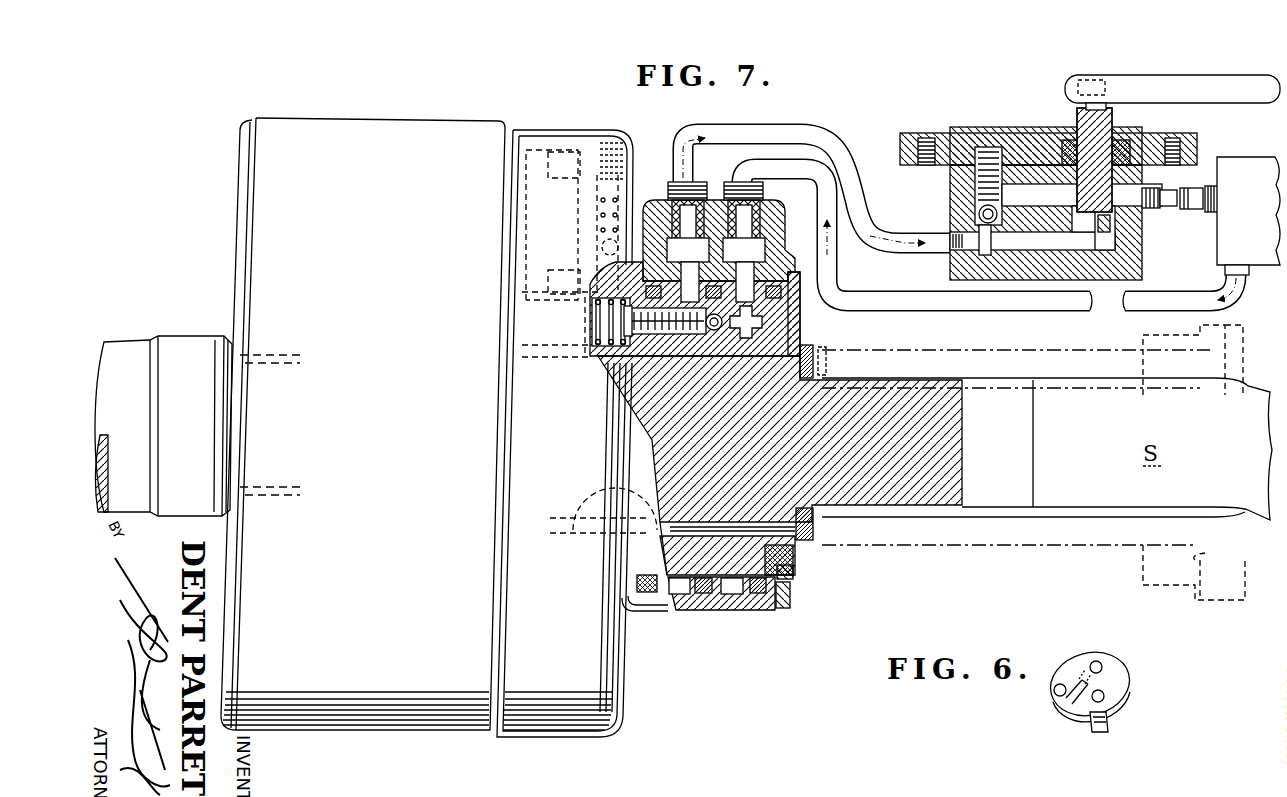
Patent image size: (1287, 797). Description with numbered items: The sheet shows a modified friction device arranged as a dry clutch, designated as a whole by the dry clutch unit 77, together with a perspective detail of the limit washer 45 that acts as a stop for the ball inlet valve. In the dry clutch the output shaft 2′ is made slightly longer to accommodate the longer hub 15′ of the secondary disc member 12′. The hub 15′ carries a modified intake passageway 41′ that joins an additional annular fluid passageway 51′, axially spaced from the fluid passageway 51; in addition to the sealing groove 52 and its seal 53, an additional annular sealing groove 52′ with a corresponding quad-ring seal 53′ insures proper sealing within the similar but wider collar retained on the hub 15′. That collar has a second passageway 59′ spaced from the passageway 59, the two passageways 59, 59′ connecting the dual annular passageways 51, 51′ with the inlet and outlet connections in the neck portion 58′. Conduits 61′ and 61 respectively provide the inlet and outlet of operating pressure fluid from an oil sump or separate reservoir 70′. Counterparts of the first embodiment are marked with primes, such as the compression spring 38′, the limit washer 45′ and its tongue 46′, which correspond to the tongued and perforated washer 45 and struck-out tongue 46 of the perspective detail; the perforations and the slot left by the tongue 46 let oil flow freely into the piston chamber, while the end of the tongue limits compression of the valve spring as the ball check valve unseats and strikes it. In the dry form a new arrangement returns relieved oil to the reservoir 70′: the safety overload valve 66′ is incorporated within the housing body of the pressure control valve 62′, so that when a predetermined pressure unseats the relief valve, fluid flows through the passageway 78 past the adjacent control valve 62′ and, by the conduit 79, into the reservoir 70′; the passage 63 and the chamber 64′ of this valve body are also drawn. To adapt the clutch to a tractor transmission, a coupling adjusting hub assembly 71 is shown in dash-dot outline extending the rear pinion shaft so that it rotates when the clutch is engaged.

In FIG. 7, the dry clutch unit 77 is at (516, 118).
In FIG. 7, the secondary disc member 12′ is at (622, 679).
In FIG. 7, the output shaft 2′ is at (780, 465).
In FIG. 7, the hub 15′ is at (768, 560).
In FIG. 7, the annular sealing groove 52′ is at (775, 610).
In FIG. 7, the fluid passageway 51 is at (680, 611).
In FIG. 7, the packing ring 52 is at (704, 611).
In FIG. 7, the packing ring 53 is at (722, 611).
In FIG. 7, the annular fluid passageway 51′ is at (740, 611).
In FIG. 7, the quad-ring seal 53′ is at (760, 611).
In FIG. 7, the intake passageway 41′ is at (760, 306).
In FIG. 7, the bolt assembly 38′ is at (592, 352).
In FIG. 7, the valve spring 46′ is at (683, 333).
In FIG. 7, the spring seat 45′ is at (630, 353).
In FIG. 7, the neck portion 58′ is at (777, 223).
In FIG. 7, the passageway 59 is at (688, 242).
In FIG. 7, the second passageway 59′ is at (744, 242).
In FIG. 7, the conduit 61 is at (873, 199).
In FIG. 7, the conduit 61′ is at (927, 292).
In FIG. 7, the coupling adjusting hub assembly 71 is at (1003, 350).
In FIG. 7, the safety overload valve 66′ is at (975, 215).
In FIG. 7, the passageway 78 is at (1082, 196).
In FIG. 7, the fluid passage 63 is at (1032, 240).
In FIG. 7, the valve chamber 64′ is at (1097, 237).
In FIG. 7, the pressure control valve 62′ is at (1054, 125).
In FIG. 7, the conduit 79 is at (1166, 192).
In FIG. 7, the reservoir 70′ is at (1248, 216).
In FIG. 6, the limit washer 45 is at (1115, 677).
In FIG. 6, the tongue 46 is at (1108, 728).